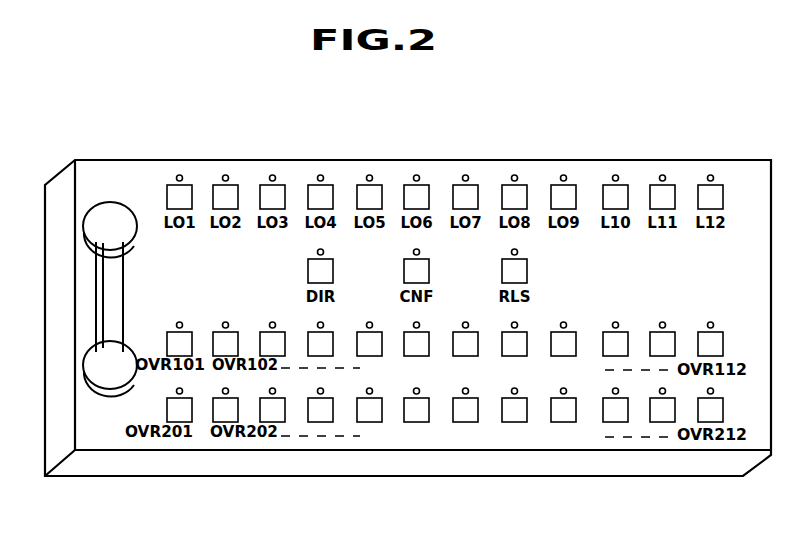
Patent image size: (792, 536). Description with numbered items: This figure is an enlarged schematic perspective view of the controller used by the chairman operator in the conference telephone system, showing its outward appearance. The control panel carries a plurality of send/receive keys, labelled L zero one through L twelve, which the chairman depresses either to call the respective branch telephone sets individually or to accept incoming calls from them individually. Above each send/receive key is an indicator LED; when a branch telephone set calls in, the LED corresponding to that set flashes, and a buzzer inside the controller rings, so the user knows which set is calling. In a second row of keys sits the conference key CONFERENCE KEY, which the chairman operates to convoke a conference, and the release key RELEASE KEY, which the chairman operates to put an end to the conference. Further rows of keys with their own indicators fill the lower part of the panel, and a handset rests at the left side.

The indicator LED is at (178, 175).
The conference key CONFERENCE KEY is at (335, 272).
The release key RELEASE KEY is at (522, 273).